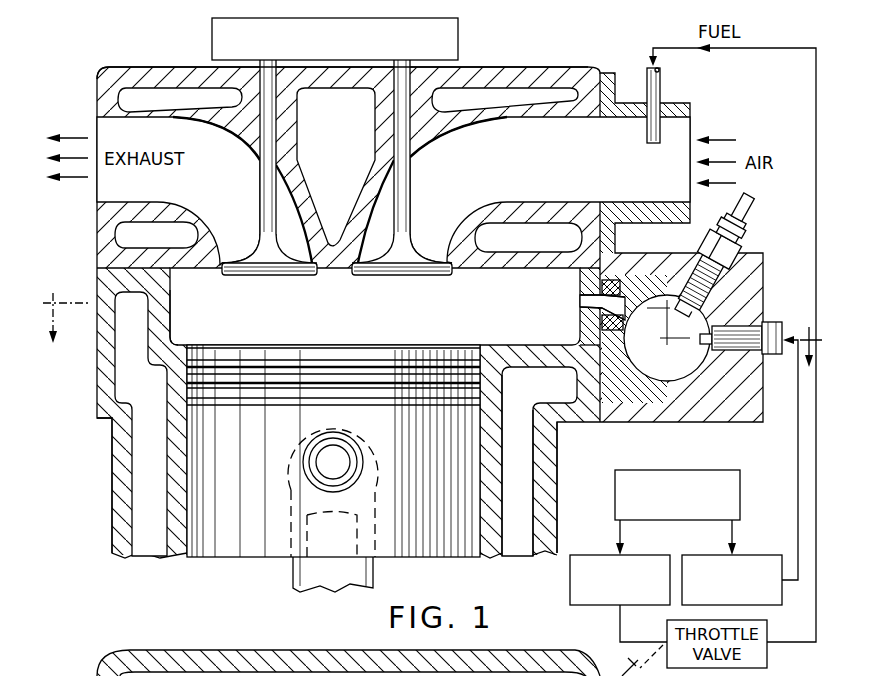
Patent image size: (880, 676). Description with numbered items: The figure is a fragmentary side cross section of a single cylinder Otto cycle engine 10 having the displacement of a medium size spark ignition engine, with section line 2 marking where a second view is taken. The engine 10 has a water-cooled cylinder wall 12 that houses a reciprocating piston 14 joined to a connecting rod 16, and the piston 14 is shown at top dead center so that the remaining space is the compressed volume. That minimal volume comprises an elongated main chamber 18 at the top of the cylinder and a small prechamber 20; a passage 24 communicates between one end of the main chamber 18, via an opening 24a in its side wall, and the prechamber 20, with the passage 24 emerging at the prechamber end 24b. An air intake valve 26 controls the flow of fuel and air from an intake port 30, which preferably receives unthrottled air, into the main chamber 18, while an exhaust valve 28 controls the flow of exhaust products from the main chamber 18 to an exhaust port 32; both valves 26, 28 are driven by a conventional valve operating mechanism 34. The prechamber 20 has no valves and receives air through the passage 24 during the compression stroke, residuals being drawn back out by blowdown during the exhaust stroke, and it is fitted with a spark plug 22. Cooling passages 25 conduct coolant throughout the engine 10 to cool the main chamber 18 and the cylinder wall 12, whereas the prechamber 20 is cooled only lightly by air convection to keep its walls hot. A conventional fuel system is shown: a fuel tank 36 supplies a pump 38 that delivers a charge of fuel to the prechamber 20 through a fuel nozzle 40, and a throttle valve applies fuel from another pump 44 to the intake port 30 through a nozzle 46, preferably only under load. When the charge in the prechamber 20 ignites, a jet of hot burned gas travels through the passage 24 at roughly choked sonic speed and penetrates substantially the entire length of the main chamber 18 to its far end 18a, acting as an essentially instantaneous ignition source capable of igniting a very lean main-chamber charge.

The section line 2- 2 is at (432, 319).
The engine 10 is at (143, 58).
The cylinder wall 12 is at (175, 540).
The piston 14 is at (440, 472).
The connecting rod 16 is at (368, 572).
The main chamber 18 is at (352, 310).
The far end 18a is at (171, 327).
The prechamber 20 is at (682, 374).
The spark plug 22 is at (750, 220).
The passage 24 is at (618, 308).
The opening 24a is at (593, 303).
The passage outlet 24b is at (636, 296).
The cooling passages 25 is at (354, 146).
The air intake valve 26 is at (403, 254).
The exhaust valve 28 is at (253, 257).
The intake port 30 is at (543, 175).
The exhaust port 32 is at (200, 195).
The valve operating mechanism 34 is at (462, 44).
The fuel tank 36 is at (730, 487).
The pump 38 is at (743, 553).
The fuel nozzle 40 is at (735, 351).
The pump 44 is at (568, 588).
The nozzle 46 is at (660, 90).